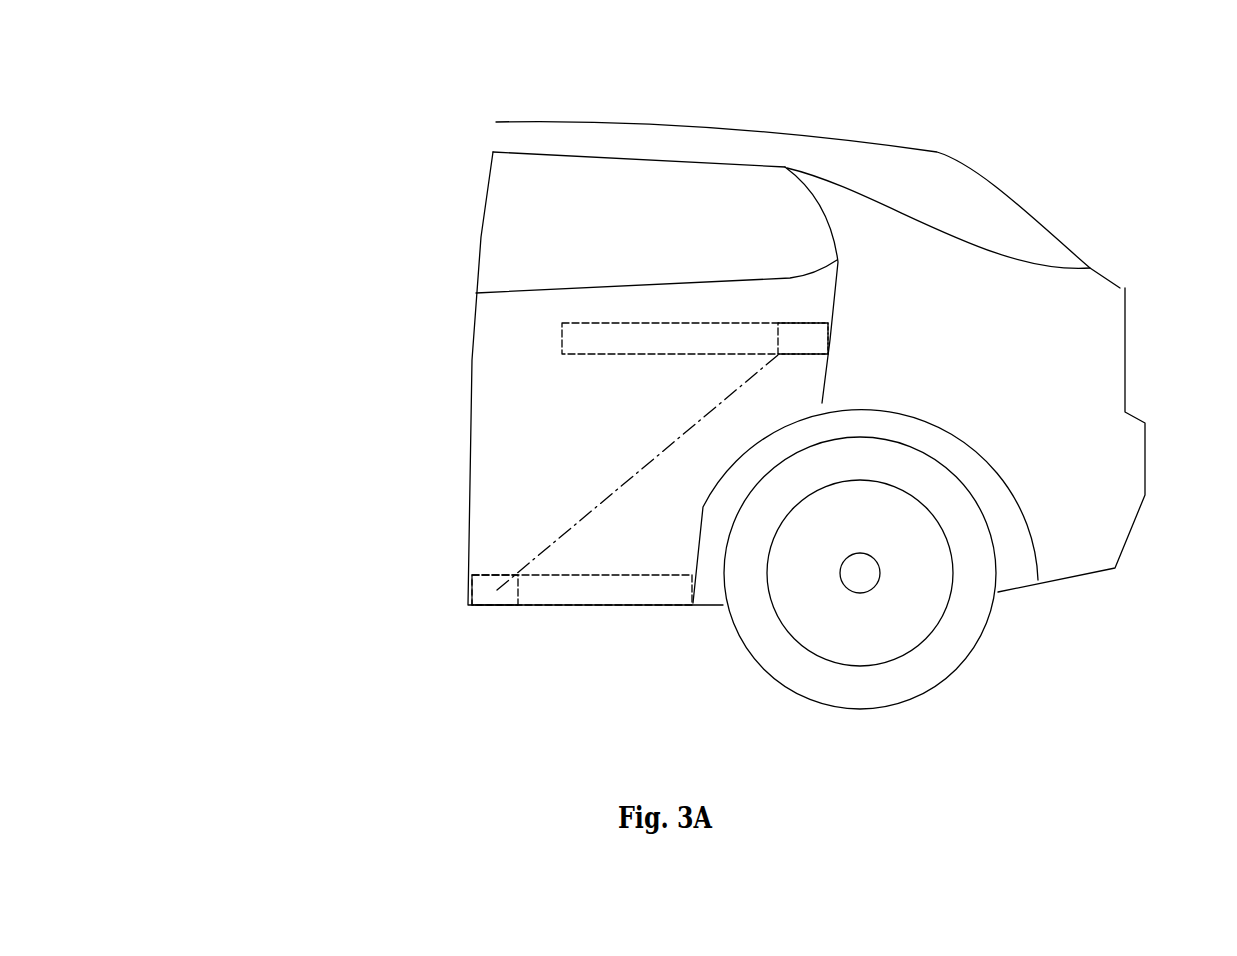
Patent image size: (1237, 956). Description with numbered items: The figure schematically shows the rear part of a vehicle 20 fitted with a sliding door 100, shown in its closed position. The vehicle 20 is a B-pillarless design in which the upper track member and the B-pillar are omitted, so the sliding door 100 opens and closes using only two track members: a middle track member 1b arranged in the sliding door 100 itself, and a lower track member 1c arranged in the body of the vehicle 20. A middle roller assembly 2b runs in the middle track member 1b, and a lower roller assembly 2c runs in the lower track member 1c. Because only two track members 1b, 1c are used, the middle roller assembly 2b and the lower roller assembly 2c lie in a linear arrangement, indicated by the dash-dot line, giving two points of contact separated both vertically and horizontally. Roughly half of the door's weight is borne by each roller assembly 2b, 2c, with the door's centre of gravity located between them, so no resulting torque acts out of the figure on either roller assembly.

The vehicle 20 is at (298, 117).
The sliding door 100 is at (480, 238).
The middle track member 1b is at (830, 340).
The middle roller assembly 2b is at (800, 360).
The lower track member 1c is at (608, 607).
The lower roller assembly 2c is at (483, 607).